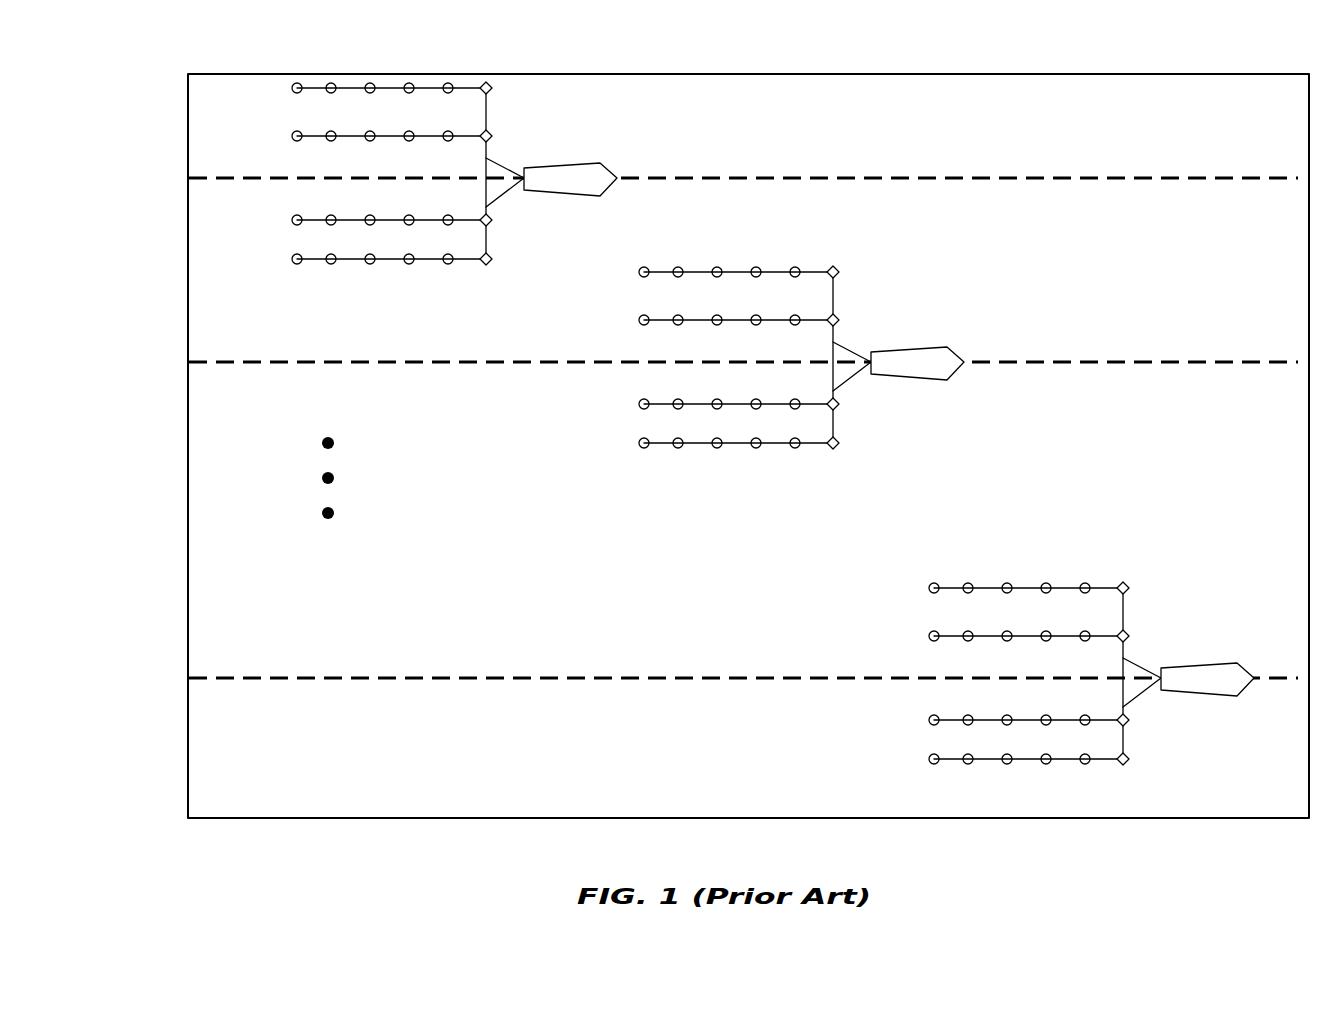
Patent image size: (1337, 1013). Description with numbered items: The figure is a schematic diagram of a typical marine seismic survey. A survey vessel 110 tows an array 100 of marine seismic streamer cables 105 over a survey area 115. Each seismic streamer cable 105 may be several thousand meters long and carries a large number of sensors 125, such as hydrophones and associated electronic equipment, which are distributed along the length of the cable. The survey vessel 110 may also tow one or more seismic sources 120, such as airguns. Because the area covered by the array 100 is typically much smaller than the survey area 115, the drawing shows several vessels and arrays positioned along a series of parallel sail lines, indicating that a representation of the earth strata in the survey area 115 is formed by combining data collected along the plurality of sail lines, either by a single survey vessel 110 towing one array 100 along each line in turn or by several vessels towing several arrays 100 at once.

The array 100 is at (668, 397).
The marine seismic streamer cable 105 is at (383, 262).
The survey vessel 110 is at (585, 163).
The survey area 115 is at (930, 820).
The seismic source 120 is at (485, 74).
The sensor 125 is at (448, 83).